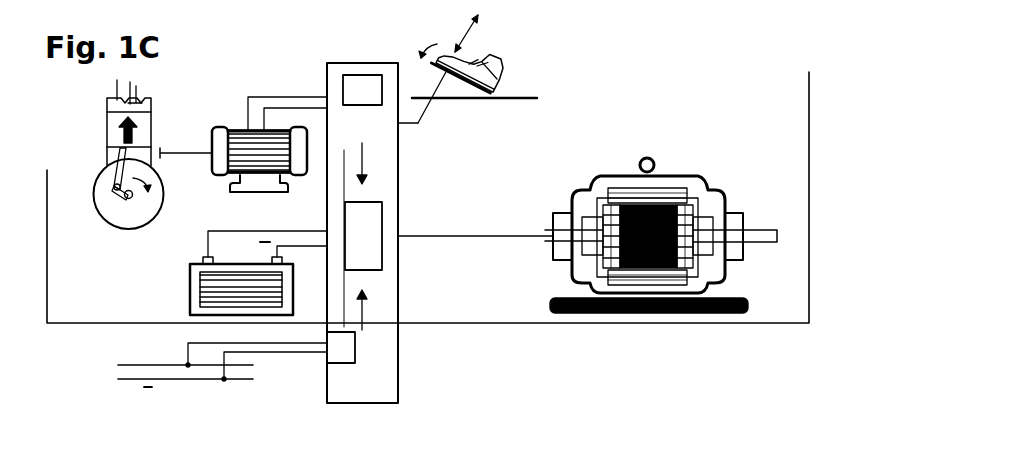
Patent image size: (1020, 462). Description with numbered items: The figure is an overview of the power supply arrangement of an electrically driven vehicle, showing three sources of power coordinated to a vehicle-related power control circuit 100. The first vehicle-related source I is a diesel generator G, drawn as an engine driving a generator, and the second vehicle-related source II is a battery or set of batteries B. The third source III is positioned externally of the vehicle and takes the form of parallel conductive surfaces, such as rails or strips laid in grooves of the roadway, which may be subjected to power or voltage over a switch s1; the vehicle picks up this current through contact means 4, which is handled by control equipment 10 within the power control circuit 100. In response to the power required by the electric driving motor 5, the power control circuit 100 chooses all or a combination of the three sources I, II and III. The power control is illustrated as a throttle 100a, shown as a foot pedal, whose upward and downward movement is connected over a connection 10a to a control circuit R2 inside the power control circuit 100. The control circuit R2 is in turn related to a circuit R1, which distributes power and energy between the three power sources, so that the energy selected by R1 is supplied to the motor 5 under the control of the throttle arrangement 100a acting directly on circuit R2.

The first vehicle related power source I is at (153, 154).
The diesel generator G is at (243, 191).
The second vehicle related power source II is at (222, 273).
The battery B is at (197, 302).
The third vehicle external power source III is at (191, 369).
The switch s1 is at (191, 369).
The vehicle related contact means 4 is at (212, 359).
The power control circuit 100 is at (388, 392).
The control equipment for contact means 10 is at (343, 347).
The connection 10a is at (412, 125).
The throttle 100a is at (457, 50).
The control circuit for energy distribution R2 is at (350, 80).
The energy distributing and three power sources controlling circuit R1 is at (367, 250).
The electric driving motor 5 is at (673, 175).